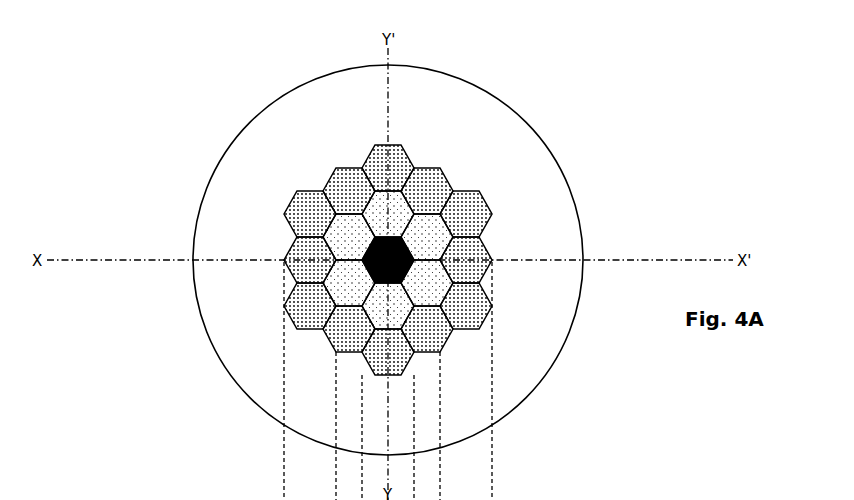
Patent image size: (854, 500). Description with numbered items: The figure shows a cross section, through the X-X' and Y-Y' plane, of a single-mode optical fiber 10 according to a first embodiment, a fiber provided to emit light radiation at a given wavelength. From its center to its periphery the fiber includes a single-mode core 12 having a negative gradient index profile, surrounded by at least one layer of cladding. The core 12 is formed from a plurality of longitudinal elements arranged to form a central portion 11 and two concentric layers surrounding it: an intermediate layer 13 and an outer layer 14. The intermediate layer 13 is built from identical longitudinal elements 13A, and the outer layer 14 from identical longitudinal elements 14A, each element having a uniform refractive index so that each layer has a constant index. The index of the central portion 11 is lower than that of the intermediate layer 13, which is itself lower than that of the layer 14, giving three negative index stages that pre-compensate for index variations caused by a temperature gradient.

The single-mode optical fiber 10 is at (579, 81).
The central portion 11 is at (373, 242).
The single-mode core 12 is at (496, 202).
The intermediate layer 13 is at (340, 238).
The longitudinal element 13A is at (380, 205).
The layer 14 is at (295, 247).
The longitudinal element 14A is at (480, 313).